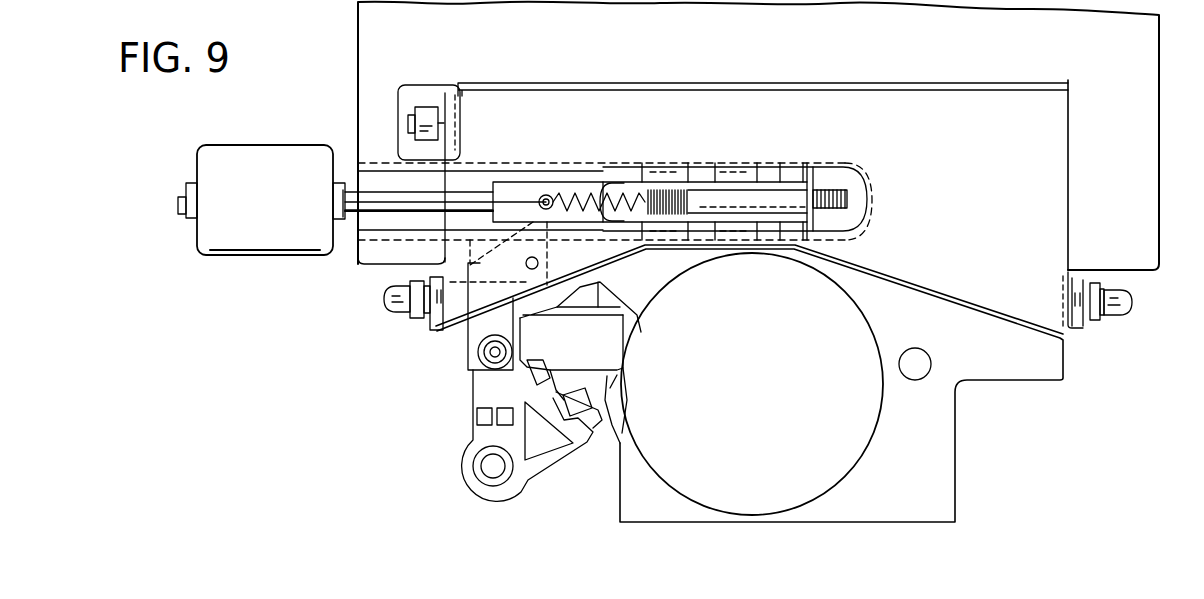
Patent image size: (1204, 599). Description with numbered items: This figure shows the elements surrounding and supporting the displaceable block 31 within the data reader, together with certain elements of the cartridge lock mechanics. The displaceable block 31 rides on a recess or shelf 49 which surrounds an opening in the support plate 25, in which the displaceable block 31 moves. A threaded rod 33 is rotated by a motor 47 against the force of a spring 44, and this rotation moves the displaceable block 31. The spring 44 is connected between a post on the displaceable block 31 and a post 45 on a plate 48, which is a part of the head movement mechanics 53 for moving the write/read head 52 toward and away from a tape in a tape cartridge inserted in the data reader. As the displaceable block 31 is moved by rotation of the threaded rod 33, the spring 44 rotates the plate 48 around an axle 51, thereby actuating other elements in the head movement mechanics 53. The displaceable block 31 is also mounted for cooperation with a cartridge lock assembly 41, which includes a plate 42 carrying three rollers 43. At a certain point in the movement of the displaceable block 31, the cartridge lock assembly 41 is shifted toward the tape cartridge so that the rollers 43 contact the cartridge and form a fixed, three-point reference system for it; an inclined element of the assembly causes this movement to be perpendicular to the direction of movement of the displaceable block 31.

The support plate 25 is at (358, 41).
The displaceable block 31 is at (738, 170).
The threaded rod 33 is at (352, 195).
The cartridge lock assembly 41 is at (883, 80).
The plate 42 is at (1068, 170).
The rollers 43 is at (424, 108).
The spring 44 is at (583, 190).
The post 45 is at (541, 195).
The motor 47 is at (235, 160).
The plate 48 is at (486, 332).
The shelf 49 is at (378, 242).
The axle 51 is at (538, 263).
The write/read head 52 is at (612, 348).
The head movement mechanics 53 is at (468, 405).